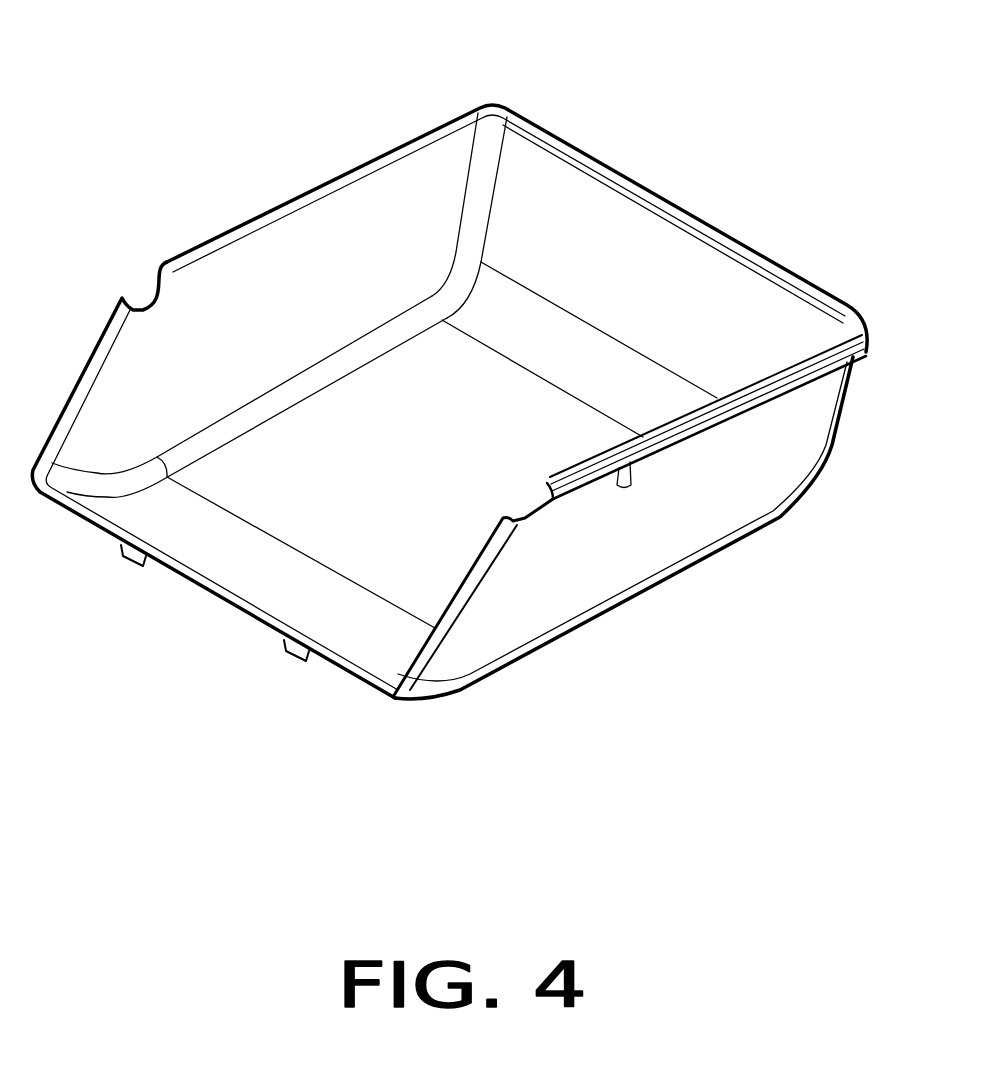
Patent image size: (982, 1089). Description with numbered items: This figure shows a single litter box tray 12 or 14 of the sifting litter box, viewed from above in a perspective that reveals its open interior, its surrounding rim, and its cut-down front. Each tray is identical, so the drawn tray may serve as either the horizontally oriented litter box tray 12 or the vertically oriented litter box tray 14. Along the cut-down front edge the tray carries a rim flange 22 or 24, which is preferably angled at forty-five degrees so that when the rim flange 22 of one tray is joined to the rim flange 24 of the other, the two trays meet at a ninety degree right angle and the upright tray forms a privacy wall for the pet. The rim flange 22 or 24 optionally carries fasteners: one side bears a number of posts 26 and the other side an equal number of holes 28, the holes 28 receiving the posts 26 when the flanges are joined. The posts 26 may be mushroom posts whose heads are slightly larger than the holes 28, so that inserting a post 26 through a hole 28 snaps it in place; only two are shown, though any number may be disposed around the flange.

The litter box tray 12 is at (449, 354).
The litter box tray 14 is at (375, 215).
The rim flange 22 is at (578, 643).
The rim flange 24 is at (468, 598).
The posts 26 is at (217, 680).
The holes 28 is at (285, 655).